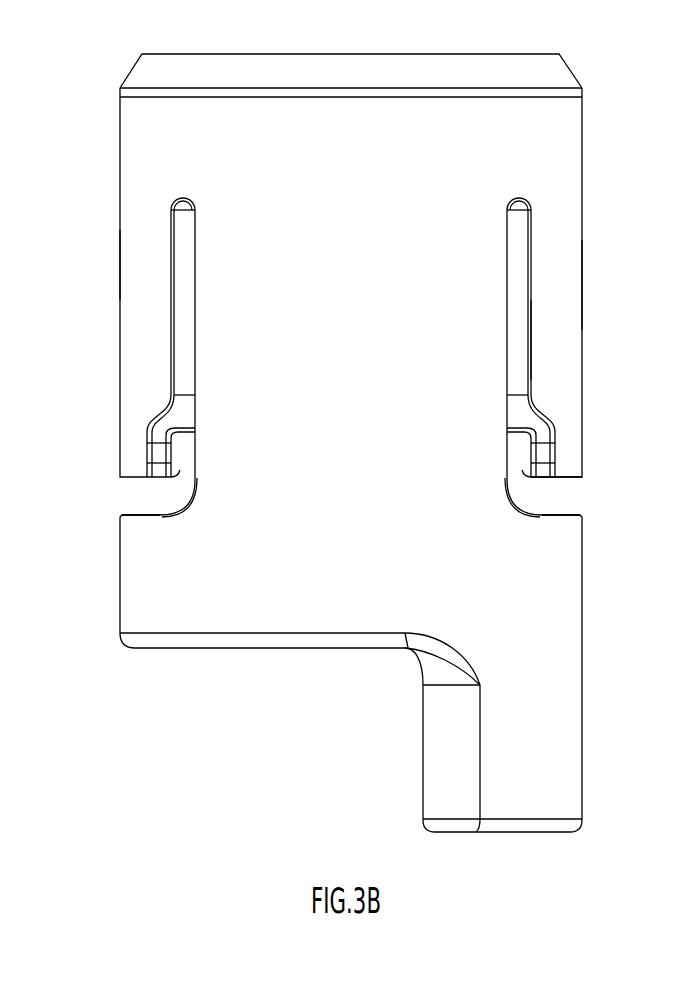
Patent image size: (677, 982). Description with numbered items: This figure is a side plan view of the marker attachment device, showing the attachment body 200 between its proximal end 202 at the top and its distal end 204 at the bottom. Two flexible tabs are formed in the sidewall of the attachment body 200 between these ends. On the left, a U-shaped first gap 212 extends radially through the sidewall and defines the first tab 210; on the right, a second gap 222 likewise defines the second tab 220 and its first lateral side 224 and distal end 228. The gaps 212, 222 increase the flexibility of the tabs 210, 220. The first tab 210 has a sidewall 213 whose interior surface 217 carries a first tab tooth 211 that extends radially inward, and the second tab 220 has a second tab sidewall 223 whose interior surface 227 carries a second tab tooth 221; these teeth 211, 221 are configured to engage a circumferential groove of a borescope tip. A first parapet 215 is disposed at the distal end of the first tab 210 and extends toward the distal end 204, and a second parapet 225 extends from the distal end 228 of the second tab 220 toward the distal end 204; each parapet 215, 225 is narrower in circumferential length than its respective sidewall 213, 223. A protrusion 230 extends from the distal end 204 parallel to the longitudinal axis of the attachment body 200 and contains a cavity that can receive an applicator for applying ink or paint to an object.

The attachment body 200 is at (177, 68).
The proximal end 202 is at (283, 52).
The distal end 204 is at (198, 649).
The first tab 210 is at (148, 348).
The first tab tooth 211 is at (178, 425).
The first gap 212 is at (137, 498).
The sidewall of the first tab 213 is at (143, 260).
The first parapet 215 is at (133, 443).
The interior surface 217 is at (172, 232).
The second tab 220 is at (540, 272).
The second tab tooth 221 is at (530, 408).
The second gap 222 is at (566, 497).
The second tab sidewall 223 is at (557, 327).
The first lateral side 224 is at (530, 340).
The second parapet 225 is at (568, 467).
The interior surface 227 is at (530, 232).
The distal end of the second tab 228 is at (575, 478).
The protrusion 230 is at (565, 725).